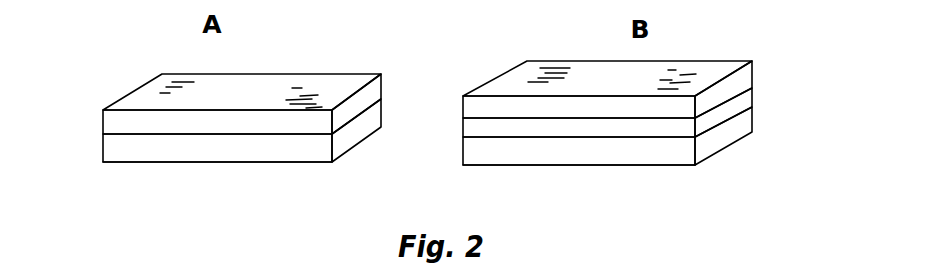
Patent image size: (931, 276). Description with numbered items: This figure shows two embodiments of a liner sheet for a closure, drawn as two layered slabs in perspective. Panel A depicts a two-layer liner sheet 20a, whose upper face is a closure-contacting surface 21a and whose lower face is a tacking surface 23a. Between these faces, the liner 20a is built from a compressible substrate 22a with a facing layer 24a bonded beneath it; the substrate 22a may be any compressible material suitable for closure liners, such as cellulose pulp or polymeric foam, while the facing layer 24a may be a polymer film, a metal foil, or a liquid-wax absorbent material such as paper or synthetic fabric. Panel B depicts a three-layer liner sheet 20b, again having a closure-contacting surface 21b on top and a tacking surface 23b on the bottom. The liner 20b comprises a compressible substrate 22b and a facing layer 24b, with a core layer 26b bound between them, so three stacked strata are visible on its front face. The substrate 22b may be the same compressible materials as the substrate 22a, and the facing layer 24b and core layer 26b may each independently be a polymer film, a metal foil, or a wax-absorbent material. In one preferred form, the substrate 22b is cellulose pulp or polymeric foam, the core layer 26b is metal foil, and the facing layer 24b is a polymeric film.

The liner sheet 20a is at (236, 110).
The closure-contacting surface 21a is at (137, 94).
The compressible substrate 22a is at (110, 124).
The facing layer 24a is at (115, 148).
The tacking surface 23a is at (204, 168).
The liner sheet 20b is at (631, 112).
The closure-contacting surface 21b is at (507, 83).
The compressible substrate 22b is at (743, 78).
The core layer 26b is at (743, 100).
The facing layer 24b is at (745, 118).
The tacking surface 23b is at (592, 173).